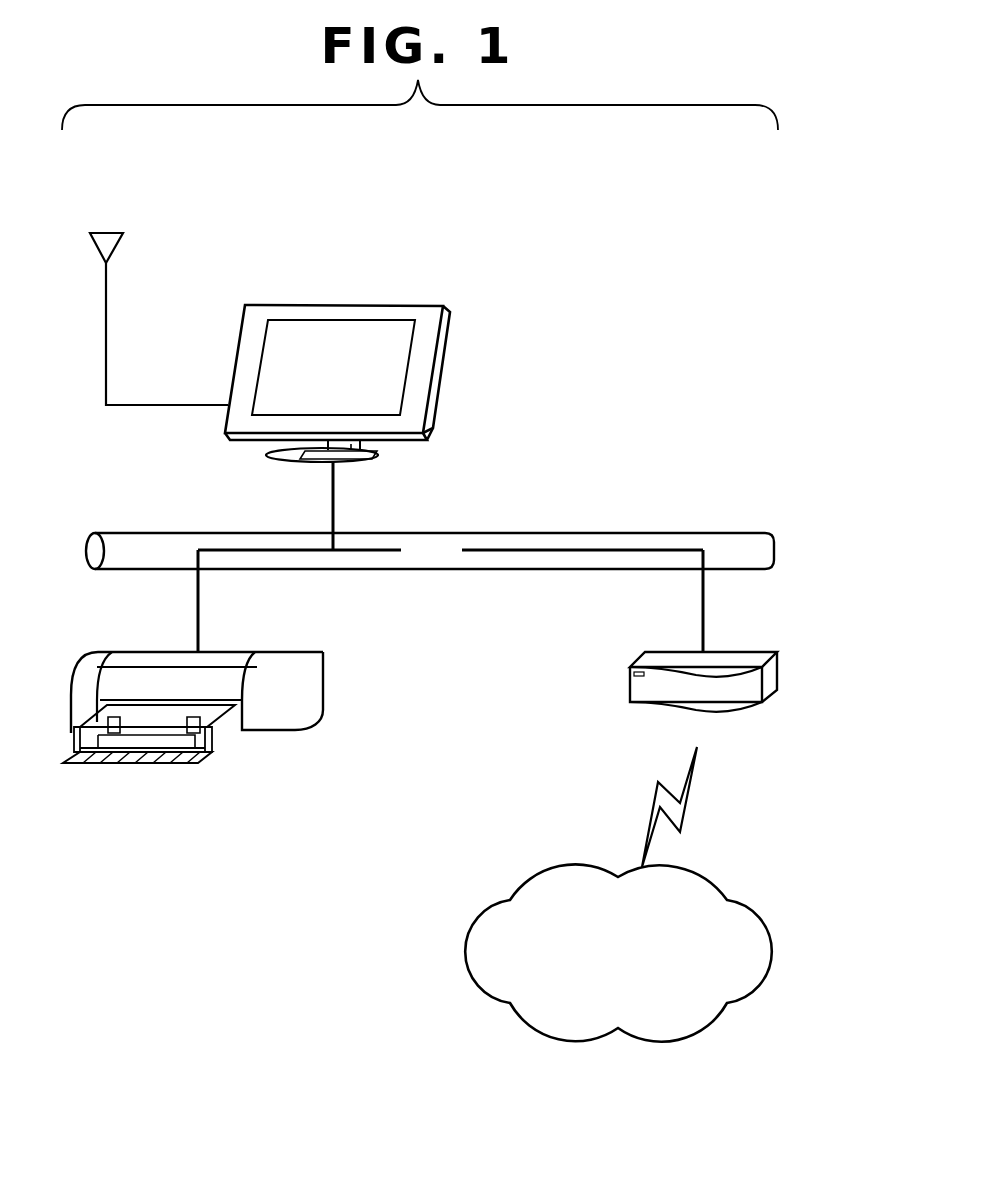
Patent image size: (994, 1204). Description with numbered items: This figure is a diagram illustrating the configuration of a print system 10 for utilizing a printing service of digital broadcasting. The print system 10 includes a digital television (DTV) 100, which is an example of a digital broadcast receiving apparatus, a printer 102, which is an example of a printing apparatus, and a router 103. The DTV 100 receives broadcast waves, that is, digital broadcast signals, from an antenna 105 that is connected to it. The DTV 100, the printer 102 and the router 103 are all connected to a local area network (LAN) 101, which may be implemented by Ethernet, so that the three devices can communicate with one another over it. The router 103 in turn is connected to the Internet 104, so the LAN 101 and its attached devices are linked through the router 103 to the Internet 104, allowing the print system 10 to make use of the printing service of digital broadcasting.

The print system 10 is at (534, 252).
The digital television (DTV) 100 is at (270, 305).
The local area network (LAN) 101 is at (653, 533).
The printer 102 is at (291, 651).
The router 103 is at (751, 651).
The Internet 104 is at (746, 902).
The antenna 105 is at (119, 238).